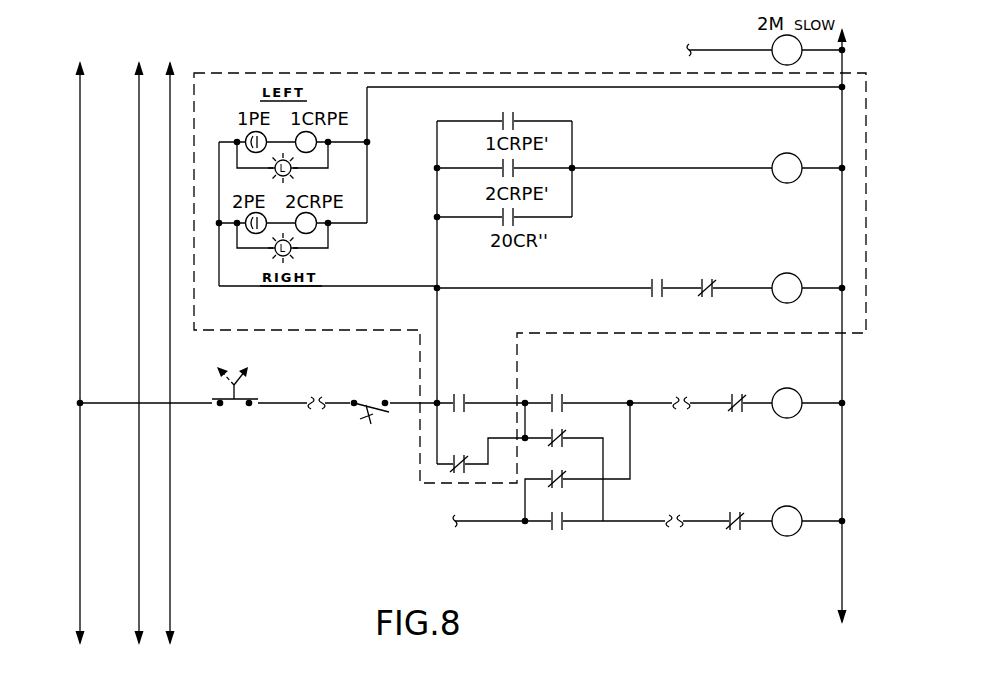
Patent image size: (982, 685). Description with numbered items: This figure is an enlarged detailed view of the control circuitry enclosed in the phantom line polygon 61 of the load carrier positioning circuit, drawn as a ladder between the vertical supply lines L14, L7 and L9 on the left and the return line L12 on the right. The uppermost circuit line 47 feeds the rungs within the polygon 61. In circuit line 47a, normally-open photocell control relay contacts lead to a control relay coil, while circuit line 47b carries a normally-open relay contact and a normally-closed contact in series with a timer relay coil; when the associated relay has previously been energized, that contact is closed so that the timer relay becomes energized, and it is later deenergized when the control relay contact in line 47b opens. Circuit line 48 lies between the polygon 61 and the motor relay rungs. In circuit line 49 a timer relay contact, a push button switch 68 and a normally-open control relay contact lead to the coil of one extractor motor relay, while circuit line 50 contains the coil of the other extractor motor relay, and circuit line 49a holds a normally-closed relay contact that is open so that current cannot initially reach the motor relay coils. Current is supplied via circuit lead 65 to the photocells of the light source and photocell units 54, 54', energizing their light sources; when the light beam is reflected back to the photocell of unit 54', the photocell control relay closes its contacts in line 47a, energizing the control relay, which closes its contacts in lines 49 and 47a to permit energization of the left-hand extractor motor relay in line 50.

The circuit line 47 is at (55, 89).
The circuit line 47a is at (68, 169).
The circuit line 47b is at (62, 294).
The circuit line 48 is at (57, 374).
The circuit line 49 is at (57, 414).
The circuit line 49a is at (68, 474).
The circuit line 50 is at (57, 539).
The light source and associated photocell unit 54 is at (258, 278).
The light source and associated photocell unit 54' is at (338, 169).
The phantom line polygon 61 is at (524, 74).
The circuit lead 65 is at (328, 304).
The push button switch 68 is at (224, 373).
The supply line L14 is at (81, 341).
The supply line L7 is at (138, 544).
The supply line L9 is at (171, 529).
The supply line L12 is at (843, 446).